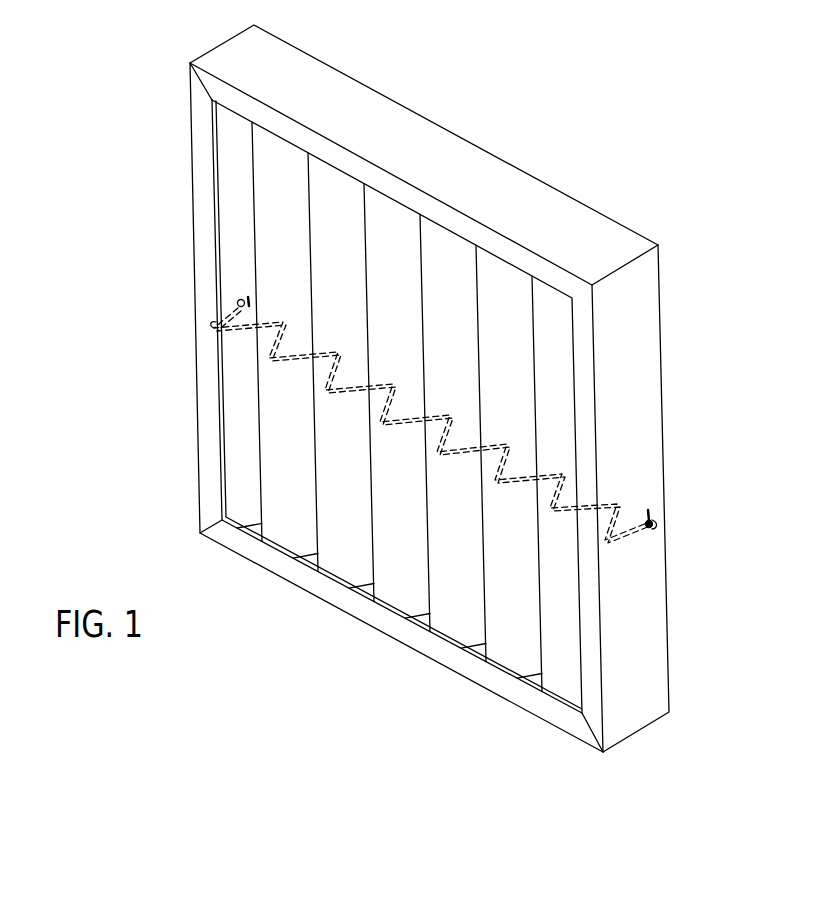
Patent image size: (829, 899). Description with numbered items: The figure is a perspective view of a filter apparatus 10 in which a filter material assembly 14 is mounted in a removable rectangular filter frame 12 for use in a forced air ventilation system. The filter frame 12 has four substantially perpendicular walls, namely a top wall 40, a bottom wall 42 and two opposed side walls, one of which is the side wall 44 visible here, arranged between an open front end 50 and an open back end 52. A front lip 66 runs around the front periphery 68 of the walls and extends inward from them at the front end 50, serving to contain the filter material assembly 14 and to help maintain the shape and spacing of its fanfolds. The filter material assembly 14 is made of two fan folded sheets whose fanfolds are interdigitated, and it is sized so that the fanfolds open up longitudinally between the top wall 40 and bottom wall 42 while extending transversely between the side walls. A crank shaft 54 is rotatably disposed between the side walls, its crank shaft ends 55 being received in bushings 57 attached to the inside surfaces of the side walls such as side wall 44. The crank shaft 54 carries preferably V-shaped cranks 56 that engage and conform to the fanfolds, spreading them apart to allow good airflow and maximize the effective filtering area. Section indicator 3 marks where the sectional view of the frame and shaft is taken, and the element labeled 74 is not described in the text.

The filter apparatus 10 is at (602, 148).
The filter frame 12 is at (215, 49).
The filter material assembly 14 is at (237, 457).
The top wall 40 is at (402, 127).
The bottom wall 42 is at (538, 678).
The side wall 44 is at (640, 379).
The open front end 50 is at (320, 583).
The open back end 52 is at (616, 891).
The crank shaft 54 is at (563, 468).
The crank shaft ends 55 is at (238, 303).
The cranks 56 is at (272, 348).
The bushings 57 is at (654, 525).
The front lip 66 is at (198, 117).
The front periphery 68 is at (497, 231).
The pleat seal 74 is at (470, 655).
The section line 3- 3 is at (431, 459).